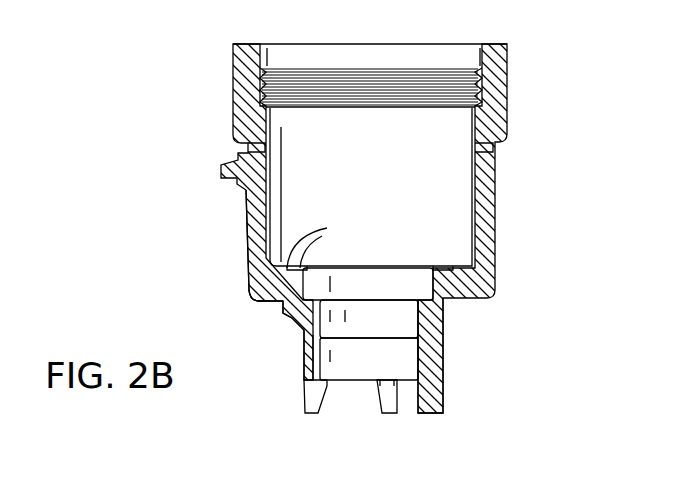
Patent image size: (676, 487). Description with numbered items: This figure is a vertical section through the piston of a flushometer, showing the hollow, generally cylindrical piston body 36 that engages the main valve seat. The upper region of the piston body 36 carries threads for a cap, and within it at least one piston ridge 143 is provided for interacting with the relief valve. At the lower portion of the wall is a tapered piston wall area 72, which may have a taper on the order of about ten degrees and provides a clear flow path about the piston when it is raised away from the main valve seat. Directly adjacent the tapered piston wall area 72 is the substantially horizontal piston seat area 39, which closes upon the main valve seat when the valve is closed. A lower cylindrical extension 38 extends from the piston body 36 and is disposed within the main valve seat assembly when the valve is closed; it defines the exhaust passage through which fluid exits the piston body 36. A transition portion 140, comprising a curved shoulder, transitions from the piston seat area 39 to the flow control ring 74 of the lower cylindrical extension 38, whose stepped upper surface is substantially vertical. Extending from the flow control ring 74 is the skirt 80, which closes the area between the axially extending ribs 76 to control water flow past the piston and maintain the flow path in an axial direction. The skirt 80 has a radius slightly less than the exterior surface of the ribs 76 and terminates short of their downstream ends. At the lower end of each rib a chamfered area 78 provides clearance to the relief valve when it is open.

The piston body 36 is at (247, 212).
The tapered piston wall area 72 is at (248, 275).
The piston seat area 39 is at (263, 303).
The transition portion 140 is at (286, 318).
The lower cylindrical extension 38 is at (285, 312).
The piston ridge 143 is at (322, 229).
The flow control ring 74 is at (305, 323).
The skirt 80 is at (381, 373).
The ribs 76 is at (443, 400).
The chamfered area 78 is at (426, 400).